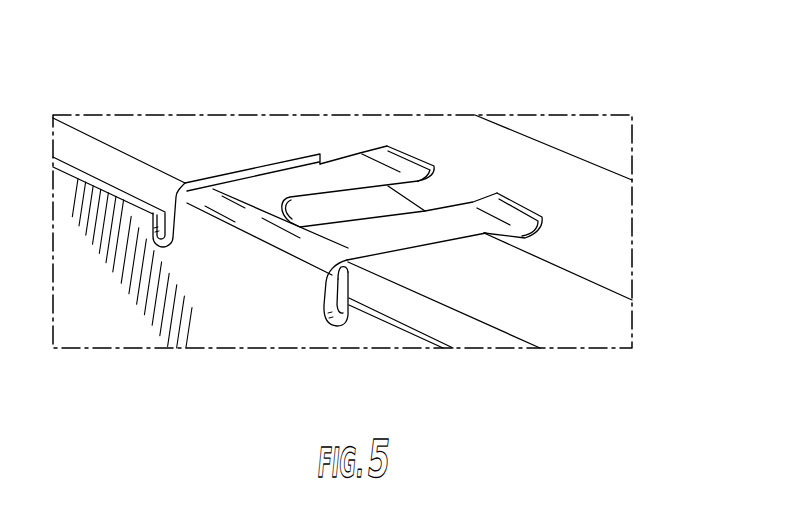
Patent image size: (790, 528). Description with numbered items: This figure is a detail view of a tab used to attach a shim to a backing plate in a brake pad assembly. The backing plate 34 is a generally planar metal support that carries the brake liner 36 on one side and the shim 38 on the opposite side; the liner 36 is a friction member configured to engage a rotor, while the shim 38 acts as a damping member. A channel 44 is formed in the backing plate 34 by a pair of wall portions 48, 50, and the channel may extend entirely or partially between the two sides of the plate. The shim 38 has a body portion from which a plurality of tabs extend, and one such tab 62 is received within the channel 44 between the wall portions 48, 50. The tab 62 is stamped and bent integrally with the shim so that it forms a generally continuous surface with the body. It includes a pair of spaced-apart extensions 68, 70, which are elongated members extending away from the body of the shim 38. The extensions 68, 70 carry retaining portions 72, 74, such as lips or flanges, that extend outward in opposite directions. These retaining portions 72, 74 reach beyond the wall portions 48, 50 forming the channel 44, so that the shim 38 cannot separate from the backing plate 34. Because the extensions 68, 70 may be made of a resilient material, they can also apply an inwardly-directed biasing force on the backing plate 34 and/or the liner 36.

The backing plate 34 is at (578, 313).
The brake liner 36 is at (613, 262).
The shim 38 is at (220, 305).
The channel 44 is at (416, 224).
The wall portion 48 is at (255, 168).
The wall portion 50 is at (398, 252).
The tab 62 is at (352, 242).
The extension 68 is at (297, 170).
The extension 70 is at (440, 223).
The retaining portion 72 is at (348, 153).
The retaining portion 74 is at (533, 210).